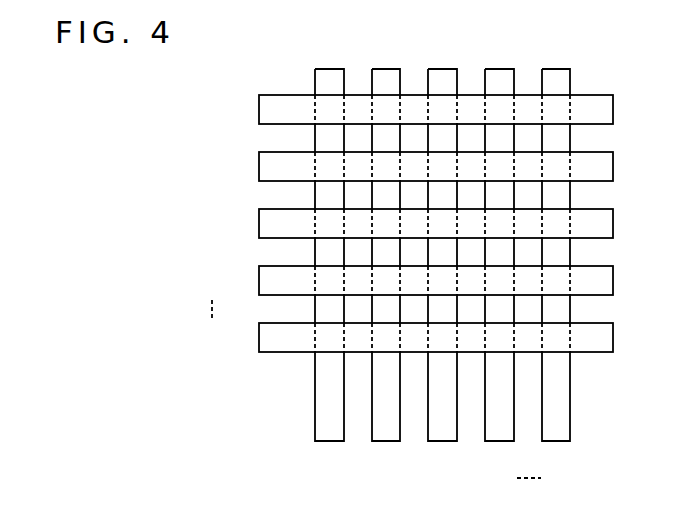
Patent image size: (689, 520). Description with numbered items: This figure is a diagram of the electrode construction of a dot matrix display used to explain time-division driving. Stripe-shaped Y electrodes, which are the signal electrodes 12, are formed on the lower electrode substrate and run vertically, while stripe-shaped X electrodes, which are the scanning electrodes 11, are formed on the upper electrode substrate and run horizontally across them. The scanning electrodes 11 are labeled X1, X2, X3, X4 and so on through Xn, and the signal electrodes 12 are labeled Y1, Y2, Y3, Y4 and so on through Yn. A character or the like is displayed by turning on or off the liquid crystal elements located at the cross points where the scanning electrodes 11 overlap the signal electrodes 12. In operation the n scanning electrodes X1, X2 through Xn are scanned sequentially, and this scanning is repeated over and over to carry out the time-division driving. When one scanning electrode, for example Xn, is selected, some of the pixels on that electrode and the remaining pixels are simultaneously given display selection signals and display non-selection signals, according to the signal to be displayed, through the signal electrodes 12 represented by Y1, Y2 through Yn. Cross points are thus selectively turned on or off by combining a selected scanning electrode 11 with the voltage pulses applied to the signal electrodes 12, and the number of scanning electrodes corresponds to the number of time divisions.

The X electrodes (scanning electrodes) 11 is at (278, 103).
The Y electrodes (signal electrodes) 12 is at (322, 408).
The first scanning electrode X1 is at (404, 111).
The second scanning electrode X2 is at (404, 168).
The third scanning electrode X3 is at (404, 225).
The fourth scanning electrode X4 is at (404, 282).
The nth scanning electrode Xn is at (404, 339).
The first signal electrode Y1 is at (329, 281).
The second signal electrode Y2 is at (386, 281).
The third signal electrode Y3 is at (442, 281).
The fourth signal electrode Y4 is at (499, 281).
The nth signal electrode Yn is at (557, 281).